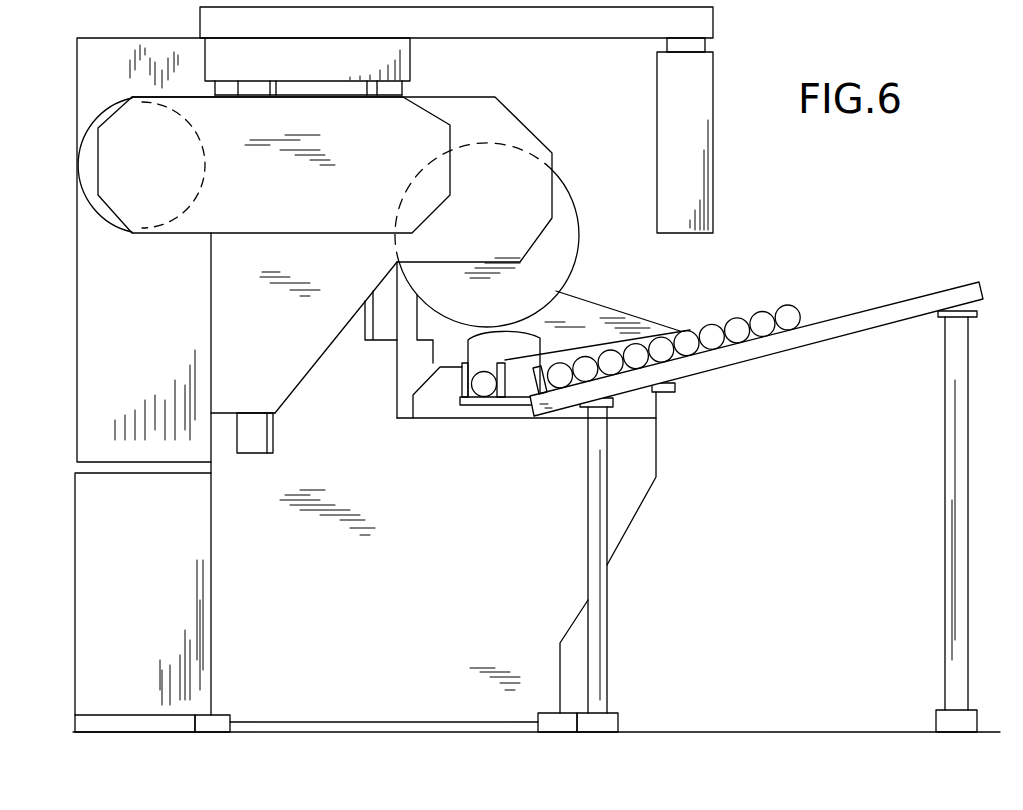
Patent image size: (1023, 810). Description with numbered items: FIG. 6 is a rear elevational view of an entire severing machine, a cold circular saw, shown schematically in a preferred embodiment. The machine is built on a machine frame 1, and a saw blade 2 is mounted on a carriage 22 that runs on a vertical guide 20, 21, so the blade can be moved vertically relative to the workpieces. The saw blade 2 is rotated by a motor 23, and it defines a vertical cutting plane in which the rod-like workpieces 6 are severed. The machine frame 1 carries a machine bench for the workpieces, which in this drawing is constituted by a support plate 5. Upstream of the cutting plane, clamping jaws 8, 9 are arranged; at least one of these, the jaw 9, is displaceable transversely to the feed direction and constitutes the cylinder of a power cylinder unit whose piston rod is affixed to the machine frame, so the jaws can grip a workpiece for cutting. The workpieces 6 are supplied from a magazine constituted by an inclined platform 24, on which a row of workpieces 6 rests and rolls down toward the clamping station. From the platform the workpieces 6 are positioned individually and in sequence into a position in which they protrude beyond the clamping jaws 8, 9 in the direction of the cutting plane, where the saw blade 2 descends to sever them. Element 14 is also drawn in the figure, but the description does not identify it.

The machine frame 1 is at (388, 652).
The saw blade 2 is at (571, 226).
The support plate 5 is at (503, 403).
The rod-like workpieces 6 is at (480, 393).
The clamping jaw 8 is at (460, 385).
The clamping jaw 9 is at (509, 385).
The feed chute 14 is at (601, 316).
The vertical guide 20 is at (248, 435).
The vertical guide 21 is at (384, 299).
The carriage 22 is at (225, 270).
The motor 23 is at (90, 148).
The inclined platform 24 is at (876, 314).